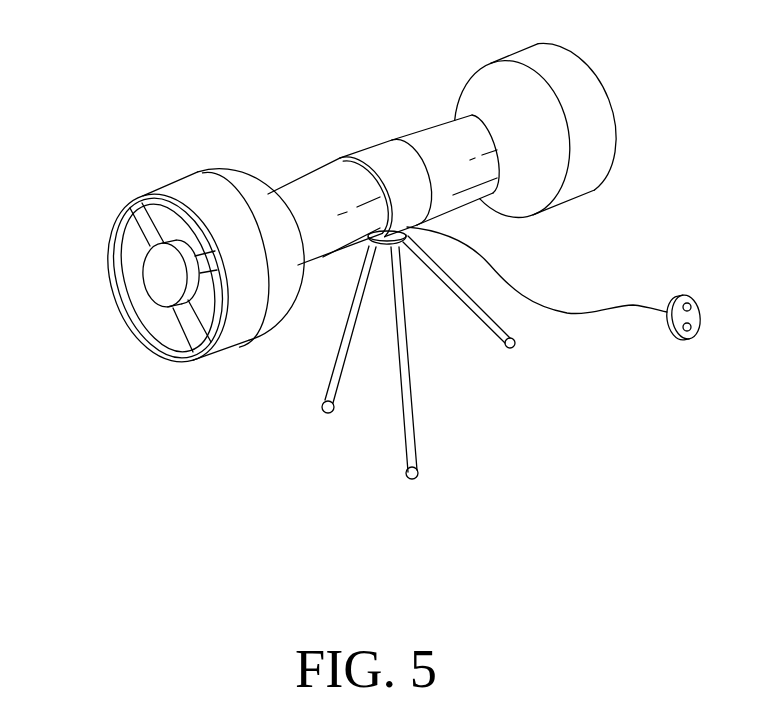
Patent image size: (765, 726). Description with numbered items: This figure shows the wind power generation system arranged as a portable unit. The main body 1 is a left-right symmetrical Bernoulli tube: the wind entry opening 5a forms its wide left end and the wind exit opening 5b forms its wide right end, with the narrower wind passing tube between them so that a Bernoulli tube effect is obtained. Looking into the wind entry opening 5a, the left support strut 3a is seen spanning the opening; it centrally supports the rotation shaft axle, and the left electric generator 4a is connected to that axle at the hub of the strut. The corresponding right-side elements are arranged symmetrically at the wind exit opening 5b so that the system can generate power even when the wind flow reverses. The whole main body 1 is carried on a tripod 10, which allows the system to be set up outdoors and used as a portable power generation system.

The main body 1 is at (318, 192).
The left support strut 3a is at (150, 214).
The left electric generator 4a is at (163, 282).
The wind entry opening 5a is at (172, 332).
The wind exit opening 5b is at (598, 112).
The tripod 10 is at (412, 434).